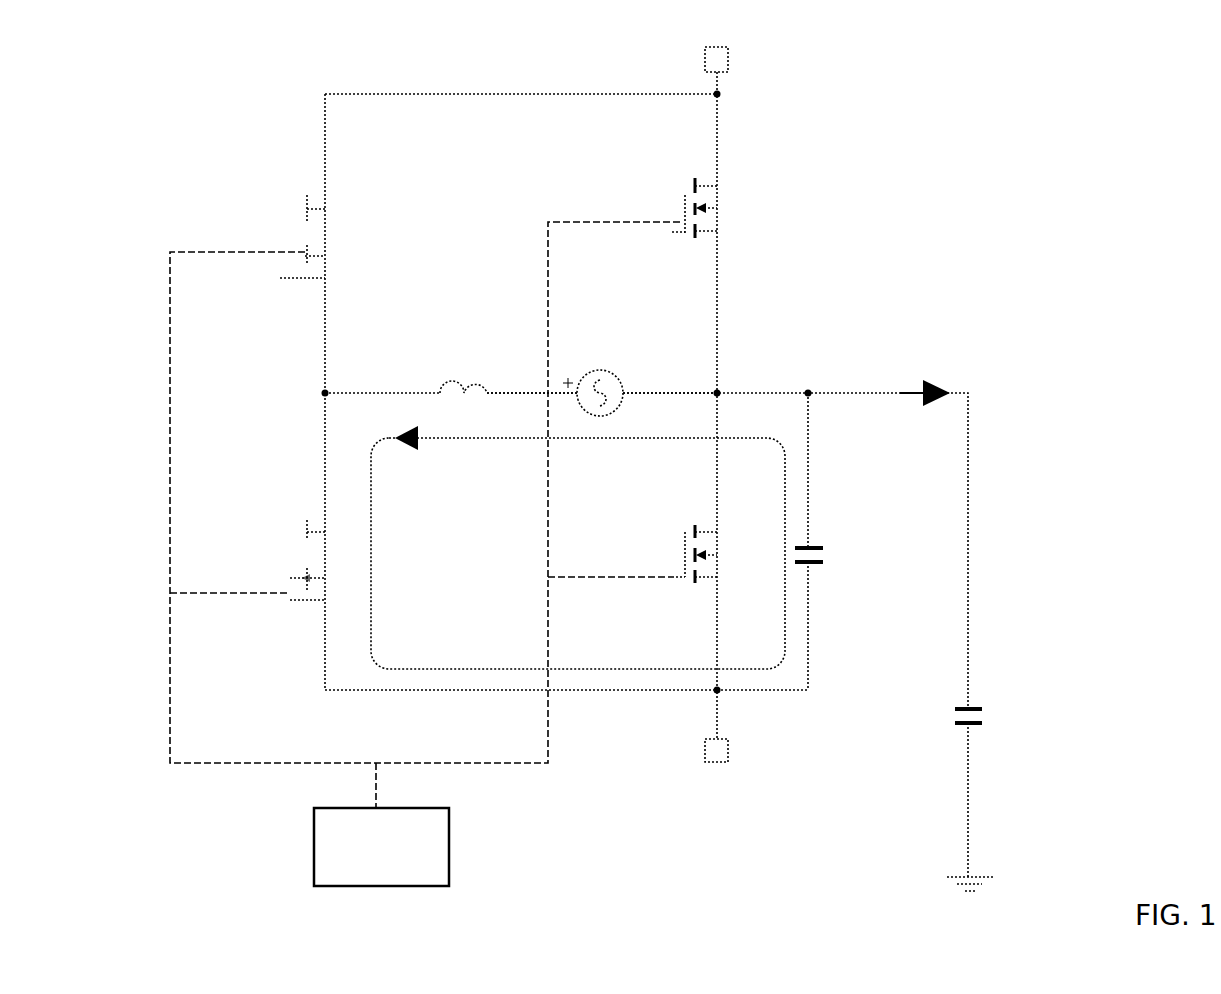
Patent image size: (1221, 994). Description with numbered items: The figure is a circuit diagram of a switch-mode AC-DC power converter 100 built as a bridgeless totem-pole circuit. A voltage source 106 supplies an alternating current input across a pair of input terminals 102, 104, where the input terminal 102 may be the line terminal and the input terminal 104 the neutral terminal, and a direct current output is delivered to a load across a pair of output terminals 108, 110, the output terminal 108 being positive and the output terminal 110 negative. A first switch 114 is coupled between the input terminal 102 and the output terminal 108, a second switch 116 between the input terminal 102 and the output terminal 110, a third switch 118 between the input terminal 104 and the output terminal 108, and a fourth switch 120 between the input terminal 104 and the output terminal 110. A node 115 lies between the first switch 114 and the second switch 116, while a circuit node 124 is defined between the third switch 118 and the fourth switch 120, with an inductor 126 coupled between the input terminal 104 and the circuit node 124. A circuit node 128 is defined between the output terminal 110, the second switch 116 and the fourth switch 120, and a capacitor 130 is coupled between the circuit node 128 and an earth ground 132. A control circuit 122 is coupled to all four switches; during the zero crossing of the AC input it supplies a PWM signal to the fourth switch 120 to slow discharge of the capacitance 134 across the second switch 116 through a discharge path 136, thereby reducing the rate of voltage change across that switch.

The switch-mode AC-DC power converter 100 is at (140, 152).
The input terminal 102 is at (647, 392).
The input terminal 104 is at (545, 390).
The voltage source 106 is at (595, 376).
The output terminal 108 is at (724, 44).
The output terminal 110 is at (724, 769).
The first switch 114 is at (667, 208).
The node 115 is at (720, 390).
The second switch 116 is at (667, 554).
The third switch 118 is at (275, 236).
The fourth switch 120 is at (275, 560).
The control circuit 122 is at (315, 848).
The circuit node 124 is at (323, 391).
The inductor 126 is at (440, 385).
The circuit node 128 is at (707, 698).
The capacitor 130 is at (962, 733).
The earth ground 132 is at (966, 909).
The capacitance 134 is at (837, 545).
The discharge path 136 is at (497, 666).